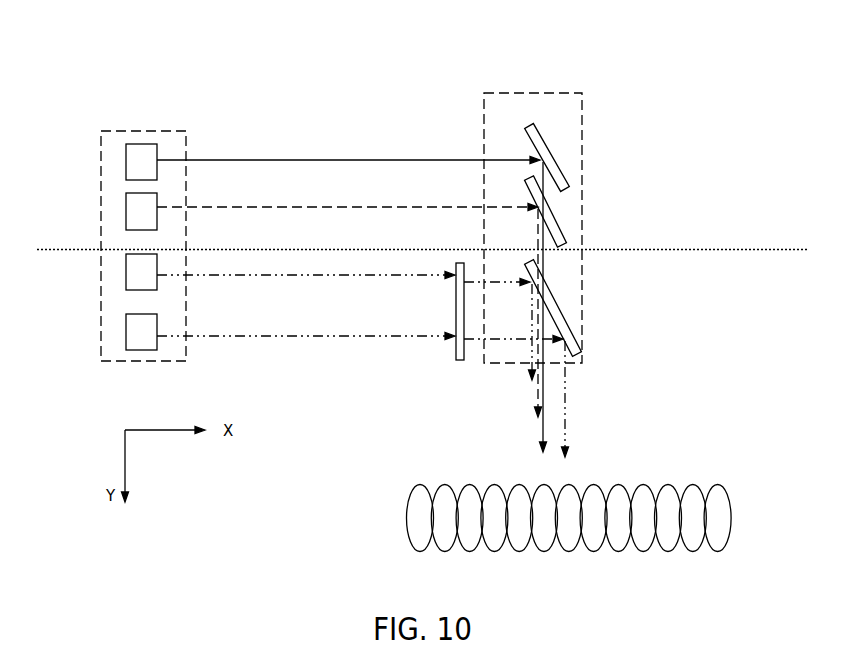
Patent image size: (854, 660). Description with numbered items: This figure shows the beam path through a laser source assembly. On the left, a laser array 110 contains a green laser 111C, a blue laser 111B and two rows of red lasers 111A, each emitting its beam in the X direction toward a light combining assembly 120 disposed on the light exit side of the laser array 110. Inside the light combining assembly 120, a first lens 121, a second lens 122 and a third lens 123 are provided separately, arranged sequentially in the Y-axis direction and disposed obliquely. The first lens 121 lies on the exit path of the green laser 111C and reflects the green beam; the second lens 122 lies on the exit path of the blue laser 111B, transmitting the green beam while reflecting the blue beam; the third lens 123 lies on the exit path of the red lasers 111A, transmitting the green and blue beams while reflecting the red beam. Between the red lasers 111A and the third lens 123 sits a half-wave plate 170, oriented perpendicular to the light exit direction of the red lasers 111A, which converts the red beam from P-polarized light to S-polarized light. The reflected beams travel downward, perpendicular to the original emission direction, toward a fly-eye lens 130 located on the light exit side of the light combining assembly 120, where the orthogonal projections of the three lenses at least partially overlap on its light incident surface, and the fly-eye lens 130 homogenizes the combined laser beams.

The laser array 110 is at (143, 122).
The green laser 111C is at (117, 159).
The blue laser 111B is at (117, 207).
The red laser 111A is at (118, 278).
The light combining assembly 120 is at (538, 84).
The first lens 121 is at (554, 134).
The second lens 122 is at (562, 212).
The third lens 123 is at (561, 292).
The half-wave plate 170 is at (461, 371).
The fly-eye lens 130 is at (572, 562).